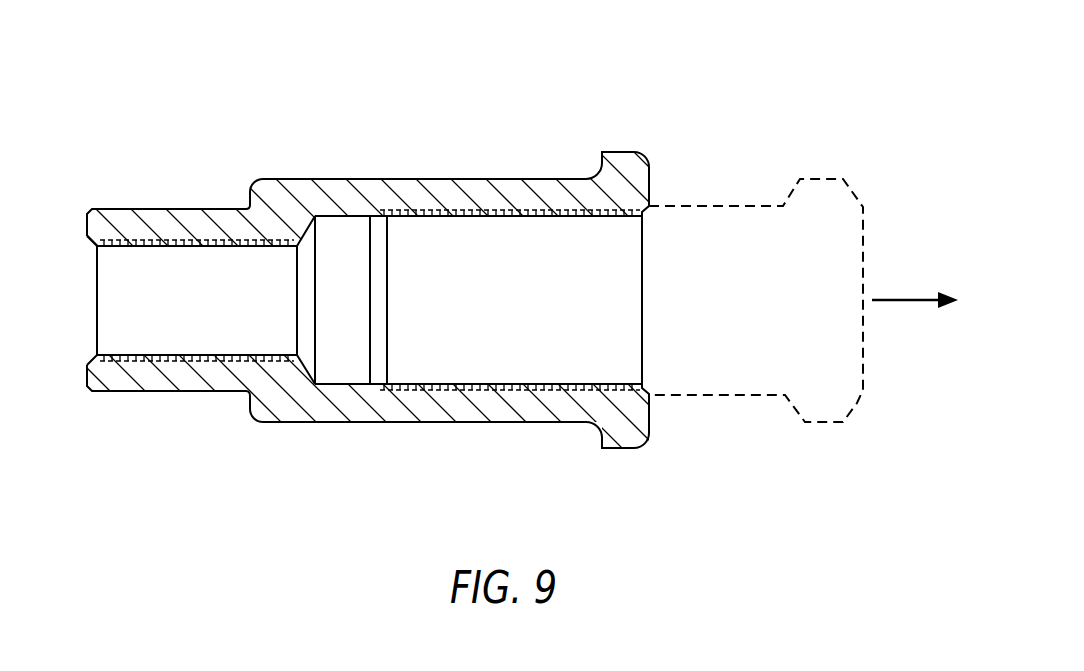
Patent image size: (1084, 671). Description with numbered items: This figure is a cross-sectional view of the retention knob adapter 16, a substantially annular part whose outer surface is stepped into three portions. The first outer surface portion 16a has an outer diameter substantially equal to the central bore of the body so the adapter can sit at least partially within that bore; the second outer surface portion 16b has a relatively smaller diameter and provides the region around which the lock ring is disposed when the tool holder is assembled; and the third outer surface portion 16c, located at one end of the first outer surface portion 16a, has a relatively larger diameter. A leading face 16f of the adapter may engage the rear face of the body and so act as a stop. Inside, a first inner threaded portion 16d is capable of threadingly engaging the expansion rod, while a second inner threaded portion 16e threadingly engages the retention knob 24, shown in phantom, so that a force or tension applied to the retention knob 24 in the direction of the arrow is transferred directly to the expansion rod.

The retention knob adapter 16 is at (396, 122).
The first outer surface portion 16a is at (337, 178).
The second outer surface portion 16b is at (197, 208).
The third outer surface portion 16c is at (618, 152).
The first inner threaded portion 16d is at (140, 240).
The second inner threaded portion 16e is at (478, 208).
The leading face 16f is at (598, 157).
The retention knob 24 is at (724, 405).